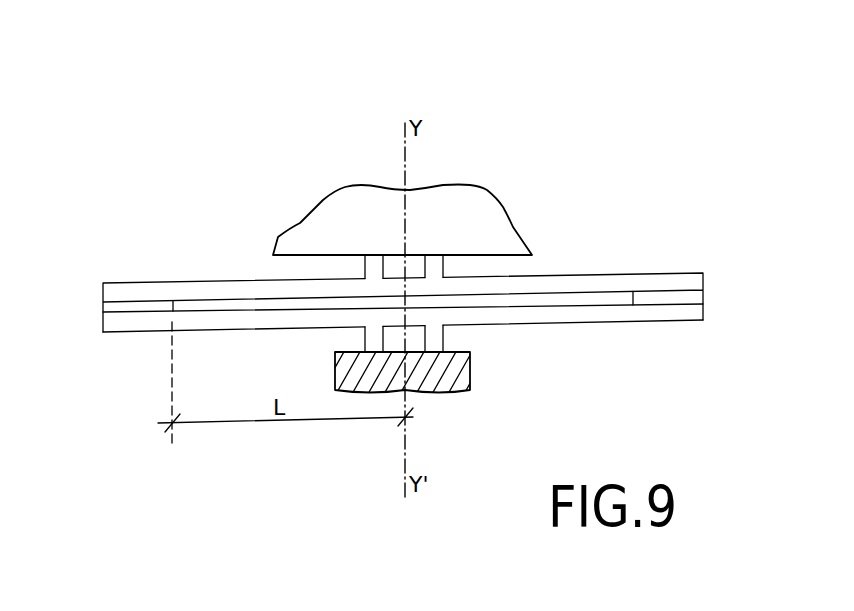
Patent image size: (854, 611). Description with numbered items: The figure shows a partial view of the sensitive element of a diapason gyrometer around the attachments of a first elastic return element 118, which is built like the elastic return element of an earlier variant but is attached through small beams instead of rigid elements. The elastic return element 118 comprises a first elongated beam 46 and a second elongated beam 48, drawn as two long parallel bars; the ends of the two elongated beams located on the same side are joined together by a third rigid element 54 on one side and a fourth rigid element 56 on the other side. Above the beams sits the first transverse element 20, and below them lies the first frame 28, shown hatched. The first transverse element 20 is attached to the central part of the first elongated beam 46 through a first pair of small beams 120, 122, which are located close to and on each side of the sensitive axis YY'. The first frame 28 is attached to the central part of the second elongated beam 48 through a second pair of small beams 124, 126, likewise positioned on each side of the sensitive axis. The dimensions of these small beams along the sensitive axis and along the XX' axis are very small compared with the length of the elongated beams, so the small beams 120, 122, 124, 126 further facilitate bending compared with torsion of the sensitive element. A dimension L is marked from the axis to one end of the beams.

The first transverse element 20 is at (505, 226).
The first frame 28 is at (438, 377).
The first elongated beam 46 is at (590, 285).
The second elongated beam 48 is at (578, 317).
The third rigid element 54 is at (143, 308).
The fourth rigid element 56 is at (665, 297).
The first elastic return element 118 is at (557, 357).
The small beam of the first pair 120 is at (376, 265).
The small beam of the first pair 122 is at (437, 265).
The small beam of the second pair 124 is at (370, 337).
The small beam of the second pair 126 is at (445, 345).